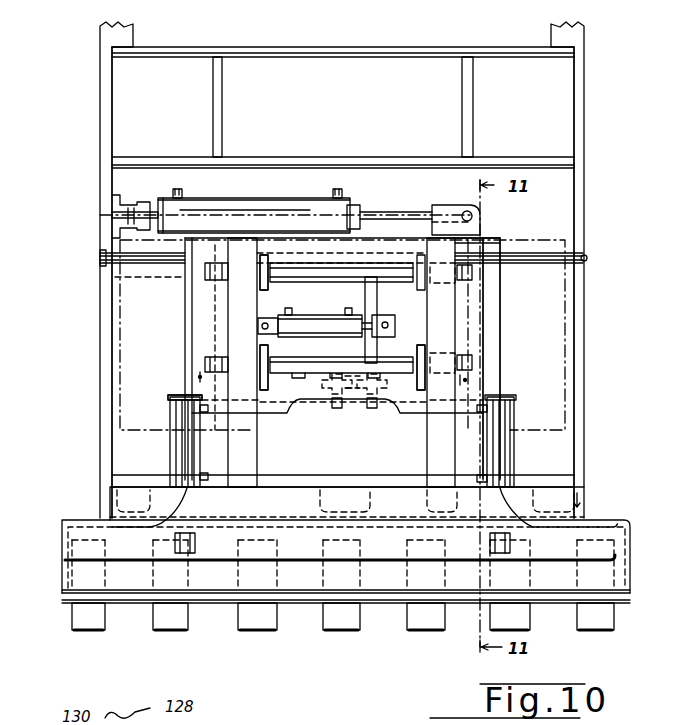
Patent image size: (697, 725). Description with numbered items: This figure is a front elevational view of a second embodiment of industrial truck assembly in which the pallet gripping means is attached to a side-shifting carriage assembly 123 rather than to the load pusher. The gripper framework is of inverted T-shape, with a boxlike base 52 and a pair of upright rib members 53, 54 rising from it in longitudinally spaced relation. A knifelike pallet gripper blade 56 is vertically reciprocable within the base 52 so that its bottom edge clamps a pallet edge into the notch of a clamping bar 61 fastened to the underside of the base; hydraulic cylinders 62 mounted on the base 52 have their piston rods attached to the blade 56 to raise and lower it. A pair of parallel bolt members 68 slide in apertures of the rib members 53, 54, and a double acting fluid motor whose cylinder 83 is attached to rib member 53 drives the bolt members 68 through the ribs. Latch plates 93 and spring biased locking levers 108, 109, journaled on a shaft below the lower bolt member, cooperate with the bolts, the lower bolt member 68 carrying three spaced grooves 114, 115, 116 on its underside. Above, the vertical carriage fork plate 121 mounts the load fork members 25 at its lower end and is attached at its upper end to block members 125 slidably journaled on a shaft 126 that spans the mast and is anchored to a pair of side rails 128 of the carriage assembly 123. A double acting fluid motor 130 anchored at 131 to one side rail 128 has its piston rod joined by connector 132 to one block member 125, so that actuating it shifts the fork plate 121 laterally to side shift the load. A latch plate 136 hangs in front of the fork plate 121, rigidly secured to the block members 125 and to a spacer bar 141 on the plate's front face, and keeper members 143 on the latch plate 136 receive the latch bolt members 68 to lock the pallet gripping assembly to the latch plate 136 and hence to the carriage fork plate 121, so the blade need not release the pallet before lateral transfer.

The load fork members 25 is at (614, 627).
The base 52 is at (62, 556).
The upright rib member 53 is at (252, 453).
The upright rib member 54 is at (435, 452).
The pallet gripper blade 56 is at (107, 522).
The clamping bar 61 is at (62, 597).
The hydraulic cylinders 62 is at (170, 450).
The bolt members 68 is at (340, 275).
The cylinder 83 is at (328, 310).
The latch plates 93 is at (198, 377).
The spring biased locking lever 108 is at (332, 398).
The spring biased locking lever 109 is at (367, 400).
The groove 114 is at (308, 356).
The groove 115 is at (335, 370).
The groove 116 is at (383, 372).
The carriage fork plate 121 is at (497, 337).
The carriage assembly 123 is at (92, 238).
The block members 125 is at (457, 241).
The shaft 126 is at (588, 258).
The side rails 128 is at (100, 152).
The double acting fluid motor 130 is at (277, 184).
The anchor 131 is at (150, 204).
The connector 132 is at (447, 208).
The latch plate 136 is at (500, 317).
The spacer bar 141 is at (202, 393).
The keeper members 143 is at (268, 283).